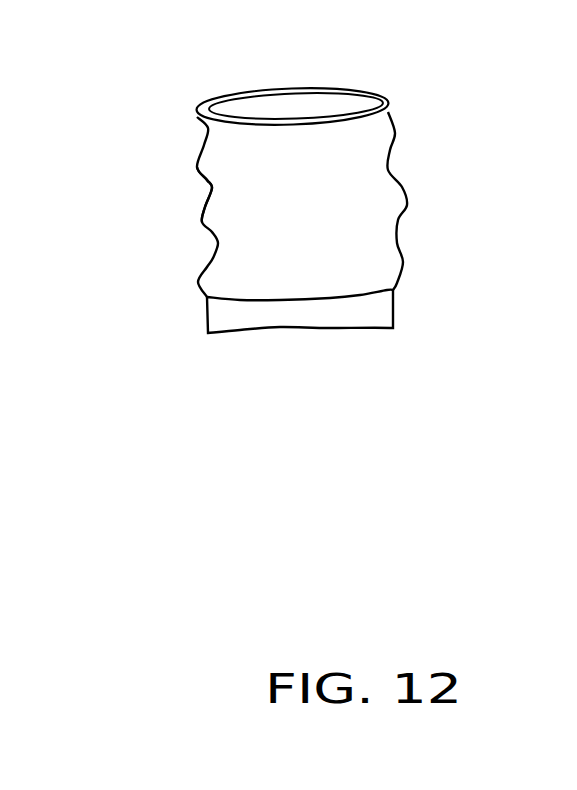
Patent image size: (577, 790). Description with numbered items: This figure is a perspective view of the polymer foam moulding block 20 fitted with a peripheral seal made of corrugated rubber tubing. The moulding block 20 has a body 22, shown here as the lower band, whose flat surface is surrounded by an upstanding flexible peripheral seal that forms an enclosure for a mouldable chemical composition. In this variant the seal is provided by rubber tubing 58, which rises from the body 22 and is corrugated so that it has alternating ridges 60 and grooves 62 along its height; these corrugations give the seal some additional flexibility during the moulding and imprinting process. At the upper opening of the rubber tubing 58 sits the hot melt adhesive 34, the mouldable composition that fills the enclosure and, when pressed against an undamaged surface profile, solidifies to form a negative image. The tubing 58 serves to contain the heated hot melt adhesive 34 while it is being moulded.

The polymer foam moulding block 20 is at (306, 211).
The body 22 is at (393, 297).
The hot melt adhesive 34 is at (313, 102).
The rubber tubing 58 is at (373, 148).
The ridges 60 is at (201, 166).
The grooves 62 is at (204, 193).